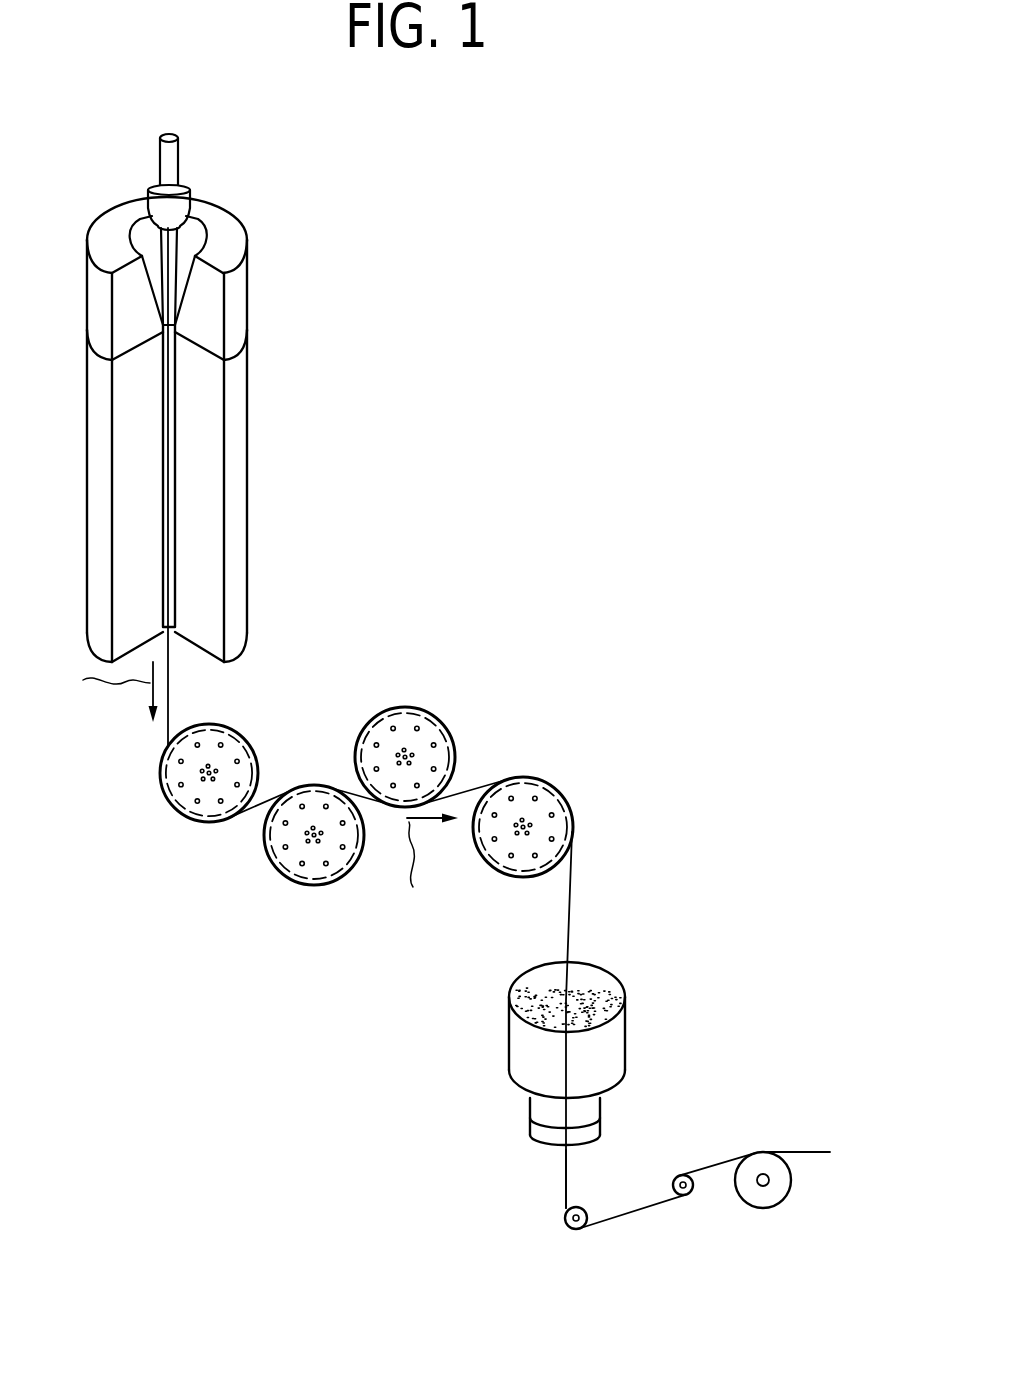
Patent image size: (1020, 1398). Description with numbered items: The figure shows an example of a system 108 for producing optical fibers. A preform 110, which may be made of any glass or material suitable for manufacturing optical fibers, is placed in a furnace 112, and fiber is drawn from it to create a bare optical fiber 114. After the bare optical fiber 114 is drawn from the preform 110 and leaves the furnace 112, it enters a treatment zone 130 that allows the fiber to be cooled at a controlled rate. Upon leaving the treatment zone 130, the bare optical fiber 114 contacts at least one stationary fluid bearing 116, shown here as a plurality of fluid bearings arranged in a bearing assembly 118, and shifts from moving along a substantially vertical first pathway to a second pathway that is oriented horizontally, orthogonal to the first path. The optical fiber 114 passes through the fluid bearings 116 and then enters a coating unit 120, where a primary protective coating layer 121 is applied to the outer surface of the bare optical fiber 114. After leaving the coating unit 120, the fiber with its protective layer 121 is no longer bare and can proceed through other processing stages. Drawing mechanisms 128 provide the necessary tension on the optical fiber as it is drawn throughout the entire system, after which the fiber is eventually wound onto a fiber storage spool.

The system for producing optical fibers 108 is at (462, 515).
The preform 110 is at (176, 243).
The furnace 112 is at (247, 242).
The bare optical fiber 114 is at (168, 700).
The stationary fluid bearing 116 is at (209, 822).
The roller assembly 118 is at (347, 673).
The coating unit 120 is at (625, 1035).
The primary protective coating layer 121 is at (566, 1180).
The drawing mechanisms 128 is at (683, 1175).
The treatment zone 130 is at (245, 447).